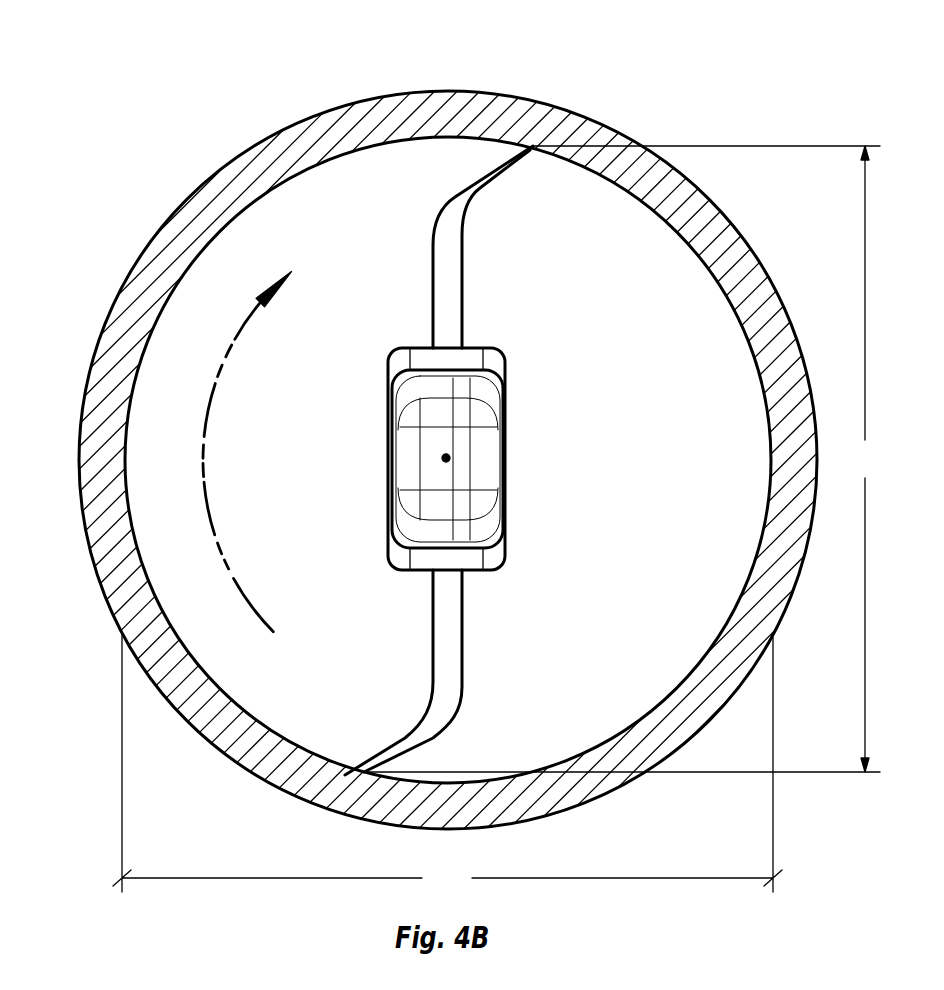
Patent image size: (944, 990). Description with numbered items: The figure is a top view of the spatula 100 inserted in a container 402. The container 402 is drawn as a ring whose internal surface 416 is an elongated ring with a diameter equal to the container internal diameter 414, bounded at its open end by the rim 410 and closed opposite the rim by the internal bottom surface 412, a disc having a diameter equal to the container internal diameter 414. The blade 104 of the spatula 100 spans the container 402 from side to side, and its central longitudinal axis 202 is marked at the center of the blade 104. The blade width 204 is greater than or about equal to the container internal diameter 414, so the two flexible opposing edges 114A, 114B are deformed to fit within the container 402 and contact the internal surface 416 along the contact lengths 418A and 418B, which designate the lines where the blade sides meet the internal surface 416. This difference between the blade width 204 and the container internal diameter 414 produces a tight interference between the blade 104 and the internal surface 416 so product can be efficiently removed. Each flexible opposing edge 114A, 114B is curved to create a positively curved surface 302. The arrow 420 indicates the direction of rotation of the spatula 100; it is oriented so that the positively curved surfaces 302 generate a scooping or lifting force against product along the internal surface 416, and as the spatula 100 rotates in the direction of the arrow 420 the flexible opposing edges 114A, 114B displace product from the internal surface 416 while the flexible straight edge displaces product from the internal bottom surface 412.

The spatula 100 is at (742, 66).
The blade 104 is at (463, 298).
The flexible opposing edge 114A is at (433, 738).
The flexible opposing edge 114B is at (484, 168).
The central longitudinal axis 202 is at (449, 460).
The blade width 204 is at (623, 459).
The positively curved surface 302 is at (501, 176).
The container 402 is at (140, 267).
The rim 410 is at (715, 228).
The internal bottom surface 412 is at (664, 510).
The container internal diameter 414 is at (447, 762).
The internal surface 416 is at (207, 250).
The contact length 418A is at (532, 146).
The contact length 418B is at (364, 772).
The arrow 420 is at (205, 402).